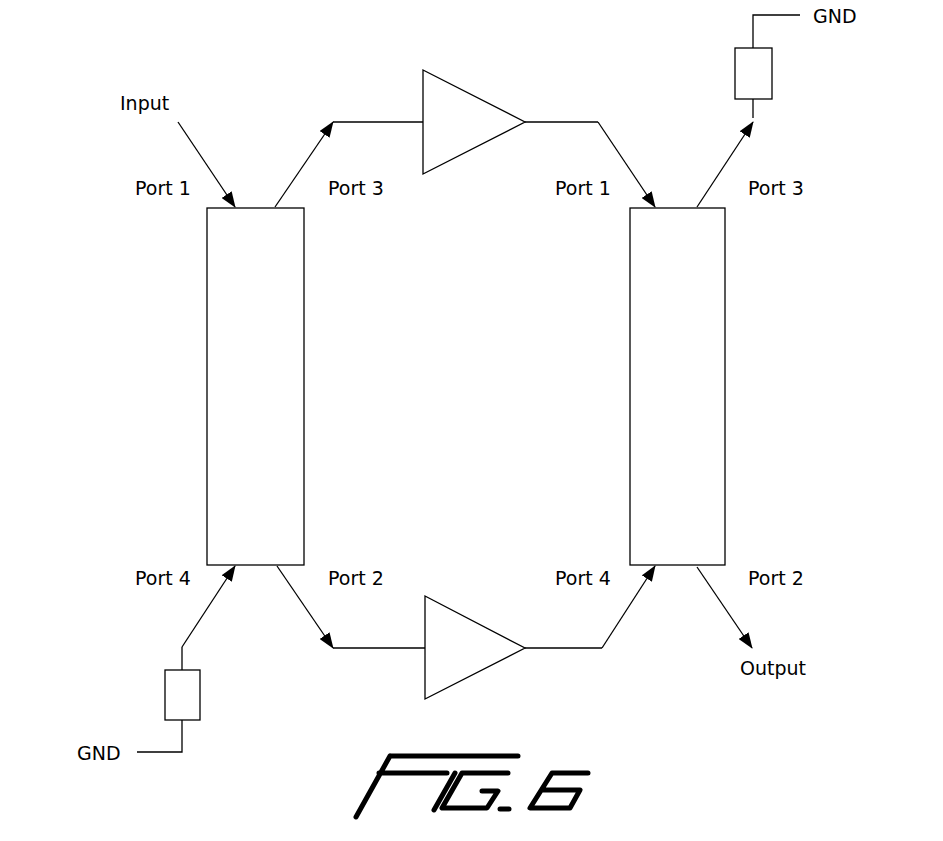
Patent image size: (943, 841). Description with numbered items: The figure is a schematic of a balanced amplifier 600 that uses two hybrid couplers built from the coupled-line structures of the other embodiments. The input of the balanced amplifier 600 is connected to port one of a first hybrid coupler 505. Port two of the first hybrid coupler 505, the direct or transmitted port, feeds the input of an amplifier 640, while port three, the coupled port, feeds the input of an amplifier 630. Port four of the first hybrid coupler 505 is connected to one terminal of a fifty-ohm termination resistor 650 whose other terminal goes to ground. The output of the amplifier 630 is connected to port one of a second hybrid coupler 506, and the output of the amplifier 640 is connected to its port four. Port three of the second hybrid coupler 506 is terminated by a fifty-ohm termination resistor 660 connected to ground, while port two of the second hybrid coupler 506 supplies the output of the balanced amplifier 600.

The first hybrid coupler 505 is at (255, 386).
The second hybrid coupler 506 is at (677, 386).
The balanced amplifier 600 is at (465, 385).
The amplifier 630 is at (474, 122).
The amplifier 640 is at (475, 647).
The termination resistor 650 is at (165, 697).
The termination resistor 660 is at (772, 73).